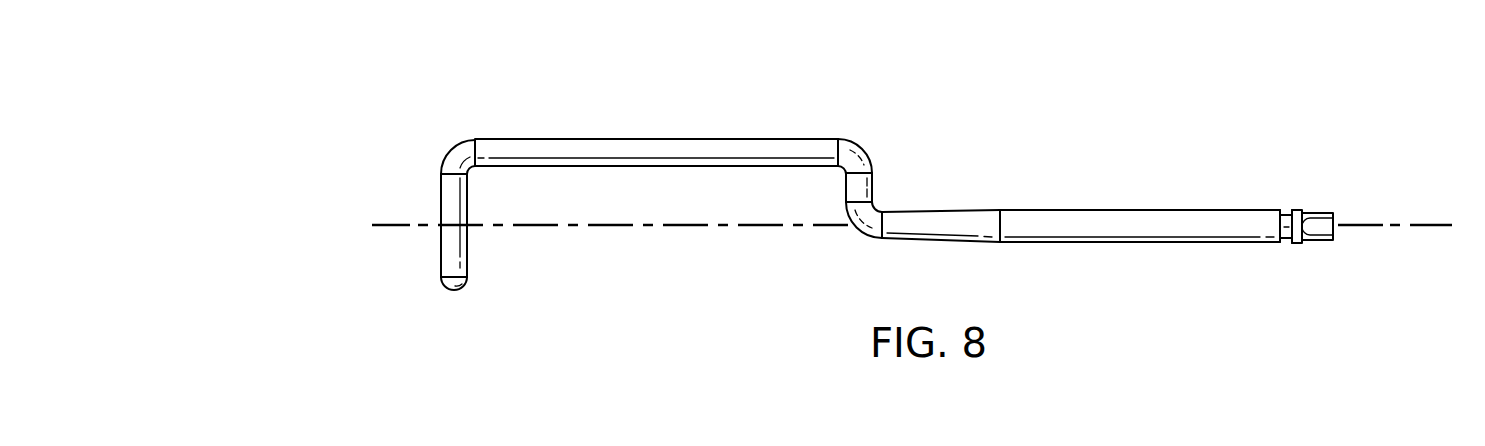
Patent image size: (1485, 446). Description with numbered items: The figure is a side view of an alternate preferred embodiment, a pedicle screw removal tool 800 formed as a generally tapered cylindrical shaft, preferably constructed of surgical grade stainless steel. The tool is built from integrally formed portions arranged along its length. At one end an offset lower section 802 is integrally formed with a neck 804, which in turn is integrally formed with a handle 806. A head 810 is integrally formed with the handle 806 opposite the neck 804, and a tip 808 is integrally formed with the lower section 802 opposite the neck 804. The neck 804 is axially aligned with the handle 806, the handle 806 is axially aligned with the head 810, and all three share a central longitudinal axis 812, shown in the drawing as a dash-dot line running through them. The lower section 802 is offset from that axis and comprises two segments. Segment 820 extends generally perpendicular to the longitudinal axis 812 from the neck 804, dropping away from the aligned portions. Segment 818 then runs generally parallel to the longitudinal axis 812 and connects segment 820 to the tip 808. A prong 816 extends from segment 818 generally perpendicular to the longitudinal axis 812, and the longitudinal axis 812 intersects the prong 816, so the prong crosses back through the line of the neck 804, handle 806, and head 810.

The pedicle screw removal tool 800 is at (962, 82).
The offset lower section 802 is at (712, 138).
The neck 804 is at (943, 210).
The handle 806 is at (1139, 210).
The tip 808 is at (460, 139).
The head 810 is at (1317, 210).
The central longitudinal axis 812 is at (1430, 226).
The prong 816 is at (450, 253).
The segment 818 is at (600, 148).
The segment 820 is at (853, 188).